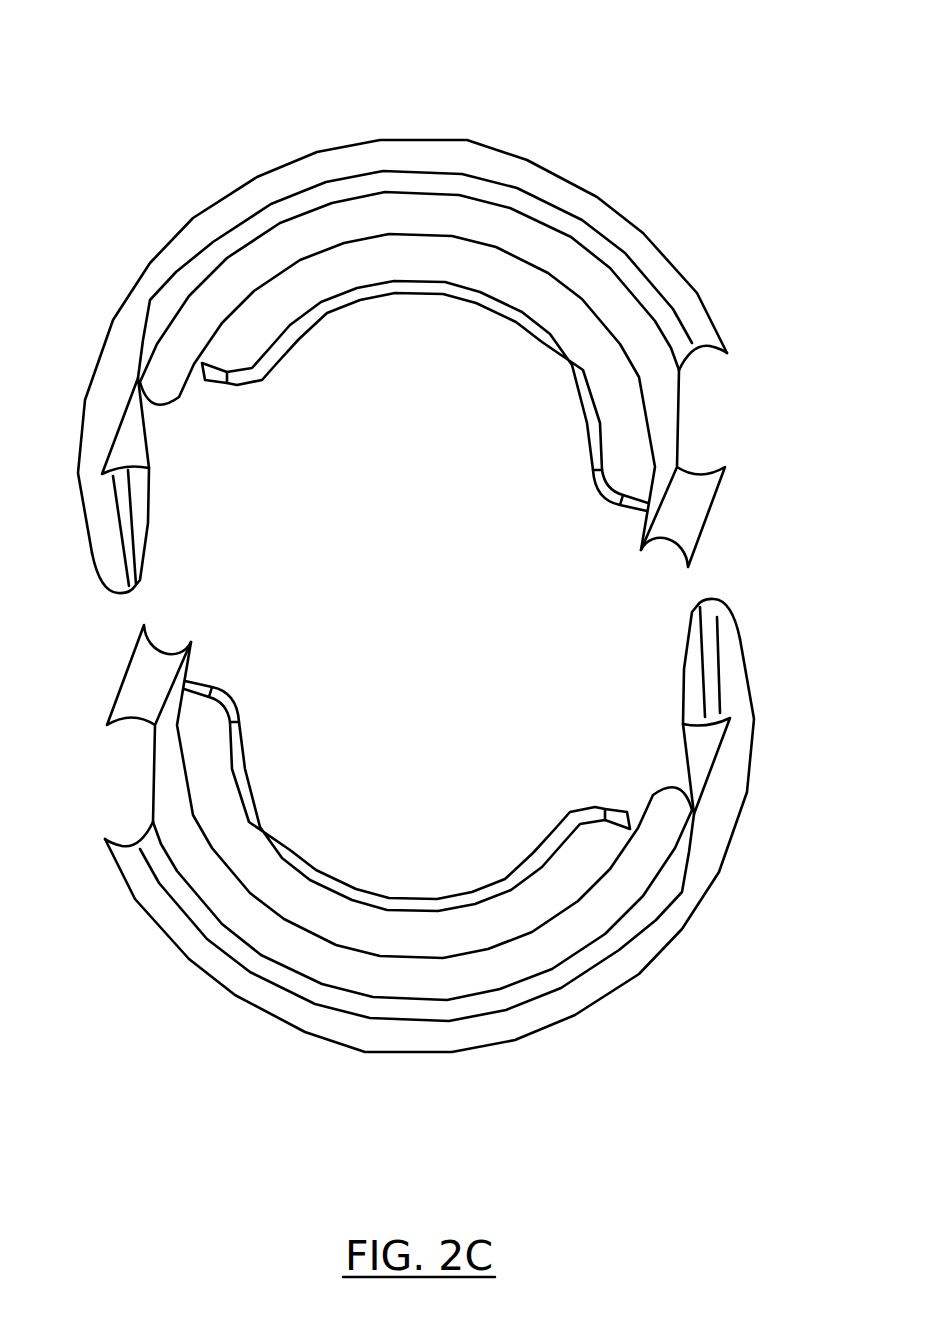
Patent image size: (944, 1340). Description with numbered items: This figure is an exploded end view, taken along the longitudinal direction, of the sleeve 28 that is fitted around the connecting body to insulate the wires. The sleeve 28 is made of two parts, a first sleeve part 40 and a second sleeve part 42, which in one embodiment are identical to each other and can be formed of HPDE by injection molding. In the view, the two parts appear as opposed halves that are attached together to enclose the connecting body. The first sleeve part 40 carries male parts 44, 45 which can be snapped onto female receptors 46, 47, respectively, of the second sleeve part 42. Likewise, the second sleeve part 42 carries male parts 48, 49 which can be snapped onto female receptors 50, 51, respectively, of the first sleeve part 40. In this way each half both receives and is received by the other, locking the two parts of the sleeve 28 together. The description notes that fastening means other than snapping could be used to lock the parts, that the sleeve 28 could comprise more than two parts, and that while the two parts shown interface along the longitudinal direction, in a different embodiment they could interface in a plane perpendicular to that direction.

The sleeve 28 is at (215, 77).
The first sleeve part 40 is at (603, 220).
The second sleeve part 42 is at (307, 1018).
The male part 44 is at (133, 592).
The male part 45 is at (688, 518).
The female receptor 46 is at (130, 843).
The female receptor 47 is at (678, 787).
The male part 48 is at (697, 603).
The male part 49 is at (138, 678).
The female receptor 50 is at (700, 350).
The female receptor 51 is at (147, 403).